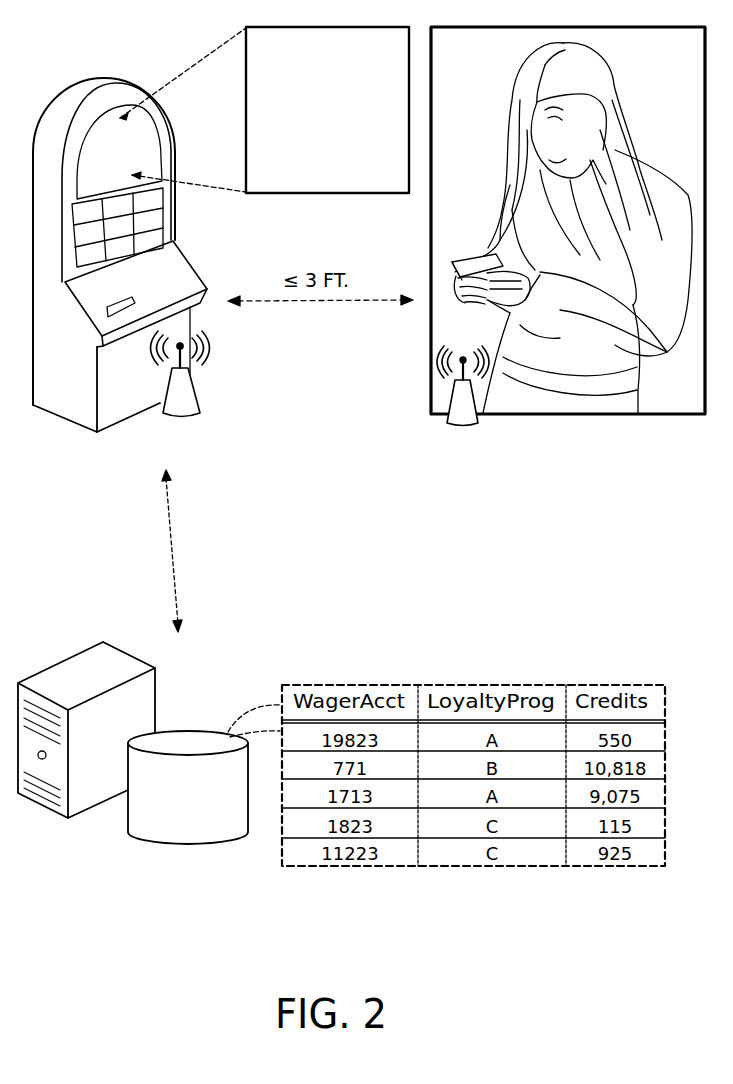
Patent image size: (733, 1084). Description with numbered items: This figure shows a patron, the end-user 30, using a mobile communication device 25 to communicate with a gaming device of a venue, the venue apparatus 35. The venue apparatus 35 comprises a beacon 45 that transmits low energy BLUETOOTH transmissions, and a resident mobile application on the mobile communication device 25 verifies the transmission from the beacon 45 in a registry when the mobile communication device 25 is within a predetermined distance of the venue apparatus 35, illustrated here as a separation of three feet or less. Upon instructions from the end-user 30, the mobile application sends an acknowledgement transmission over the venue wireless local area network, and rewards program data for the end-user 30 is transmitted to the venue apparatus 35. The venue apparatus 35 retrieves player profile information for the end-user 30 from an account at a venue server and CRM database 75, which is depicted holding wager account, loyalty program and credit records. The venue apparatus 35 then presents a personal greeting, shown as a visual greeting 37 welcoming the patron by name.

The venue apparatus 35 is at (72, 93).
The visual greeting 37 is at (306, 203).
The mobile communication device 25 is at (475, 255).
The end-user 30 is at (528, 408).
The beacon 45 is at (186, 420).
The CRM database 75 is at (174, 838).